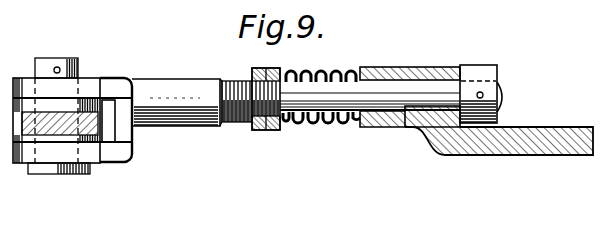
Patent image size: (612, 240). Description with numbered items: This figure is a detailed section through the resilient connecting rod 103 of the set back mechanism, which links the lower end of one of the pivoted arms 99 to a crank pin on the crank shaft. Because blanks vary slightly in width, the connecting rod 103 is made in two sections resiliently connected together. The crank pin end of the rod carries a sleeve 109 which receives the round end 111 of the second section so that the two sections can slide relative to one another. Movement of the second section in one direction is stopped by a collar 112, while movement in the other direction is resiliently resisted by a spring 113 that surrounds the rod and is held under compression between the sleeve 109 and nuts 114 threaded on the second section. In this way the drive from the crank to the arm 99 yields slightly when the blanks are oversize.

The arm 99 is at (97, 97).
The connecting rod 103 is at (547, 137).
The sleeve 109 is at (405, 73).
The round end 111 is at (416, 99).
The collar 112 is at (493, 77).
The spring 113 is at (321, 72).
The nuts 114 is at (273, 129).